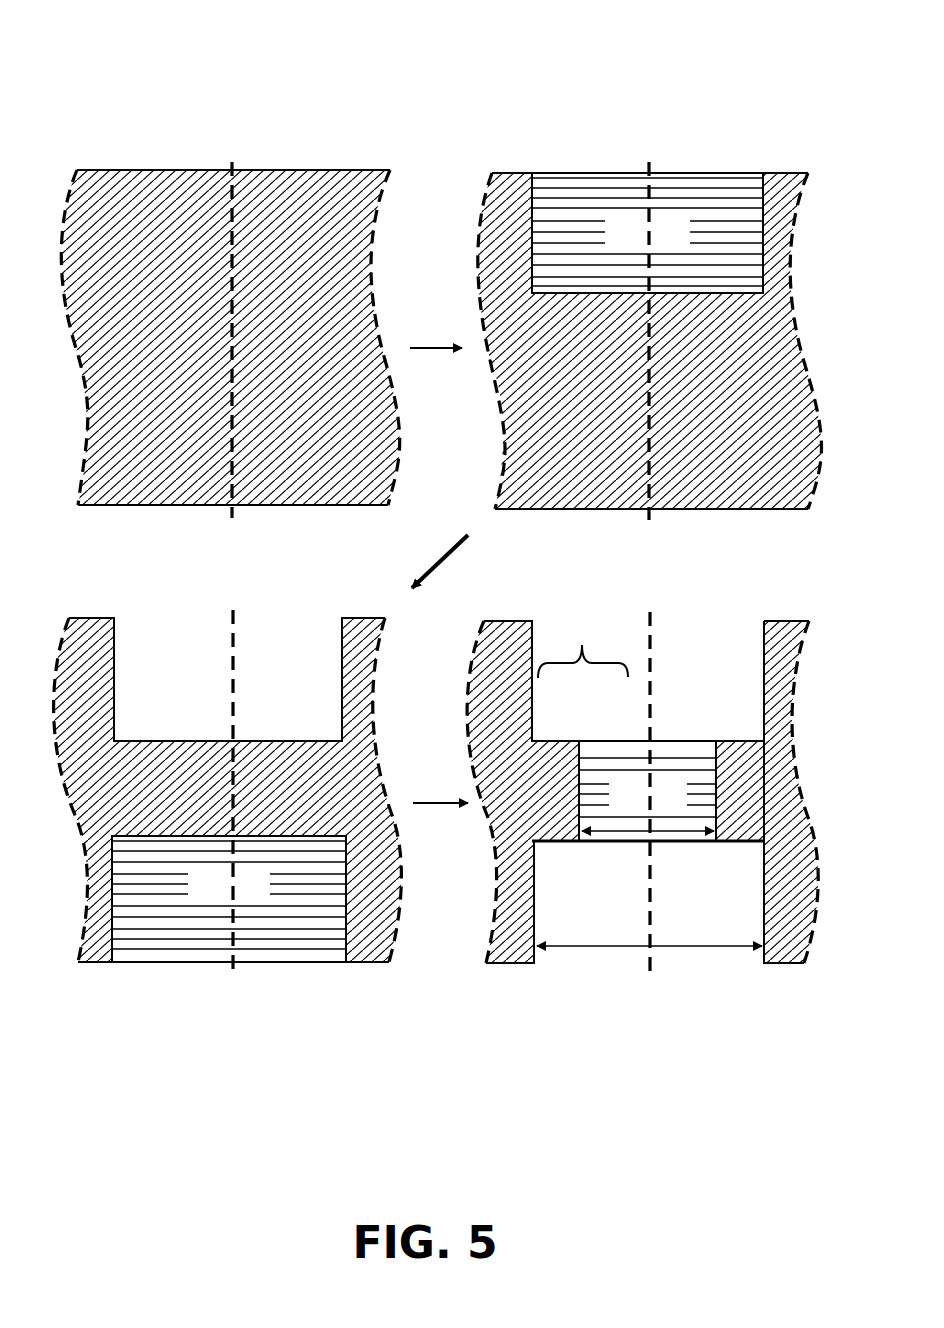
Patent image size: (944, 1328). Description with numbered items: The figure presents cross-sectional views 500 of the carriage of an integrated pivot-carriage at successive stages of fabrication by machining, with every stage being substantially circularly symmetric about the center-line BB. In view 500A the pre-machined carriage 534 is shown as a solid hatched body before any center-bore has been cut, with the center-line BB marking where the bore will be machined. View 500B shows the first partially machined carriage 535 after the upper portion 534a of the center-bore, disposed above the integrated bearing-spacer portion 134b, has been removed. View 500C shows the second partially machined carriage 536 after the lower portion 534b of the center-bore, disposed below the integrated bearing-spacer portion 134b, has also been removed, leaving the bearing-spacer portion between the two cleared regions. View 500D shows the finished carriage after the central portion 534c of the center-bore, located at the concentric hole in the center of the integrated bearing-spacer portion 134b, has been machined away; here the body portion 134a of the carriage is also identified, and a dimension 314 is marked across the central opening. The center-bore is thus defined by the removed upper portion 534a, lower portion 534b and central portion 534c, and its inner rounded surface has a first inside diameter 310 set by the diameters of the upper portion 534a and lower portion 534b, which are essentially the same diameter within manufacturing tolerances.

The cross-sectional views 500 is at (90, 100).
The cross-sectional view of pre-machined carriage 500A is at (261, 347).
The cross-sectional view of first partially machined carriage 500B is at (619, 349).
The cross-sectional view of second partially machined carriage 500C is at (257, 805).
The cross-sectional view of carriage 500D is at (619, 804).
The pre-machined carriage 534 is at (312, 247).
The first partially machined carriage 535 is at (553, 432).
The upper portion of the center-bore 534a is at (647, 233).
The lower portion of the center-bore 534b is at (229, 899).
The central portion of the center-bore 534c is at (647, 791).
The second partially machined carriage 536 is at (315, 758).
The body portion of the carriage 134a is at (508, 724).
The integrated bearing-spacer portion 134b is at (558, 774).
The upper opening width 314 is at (582, 831).
The first inside diameter 310 is at (582, 946).